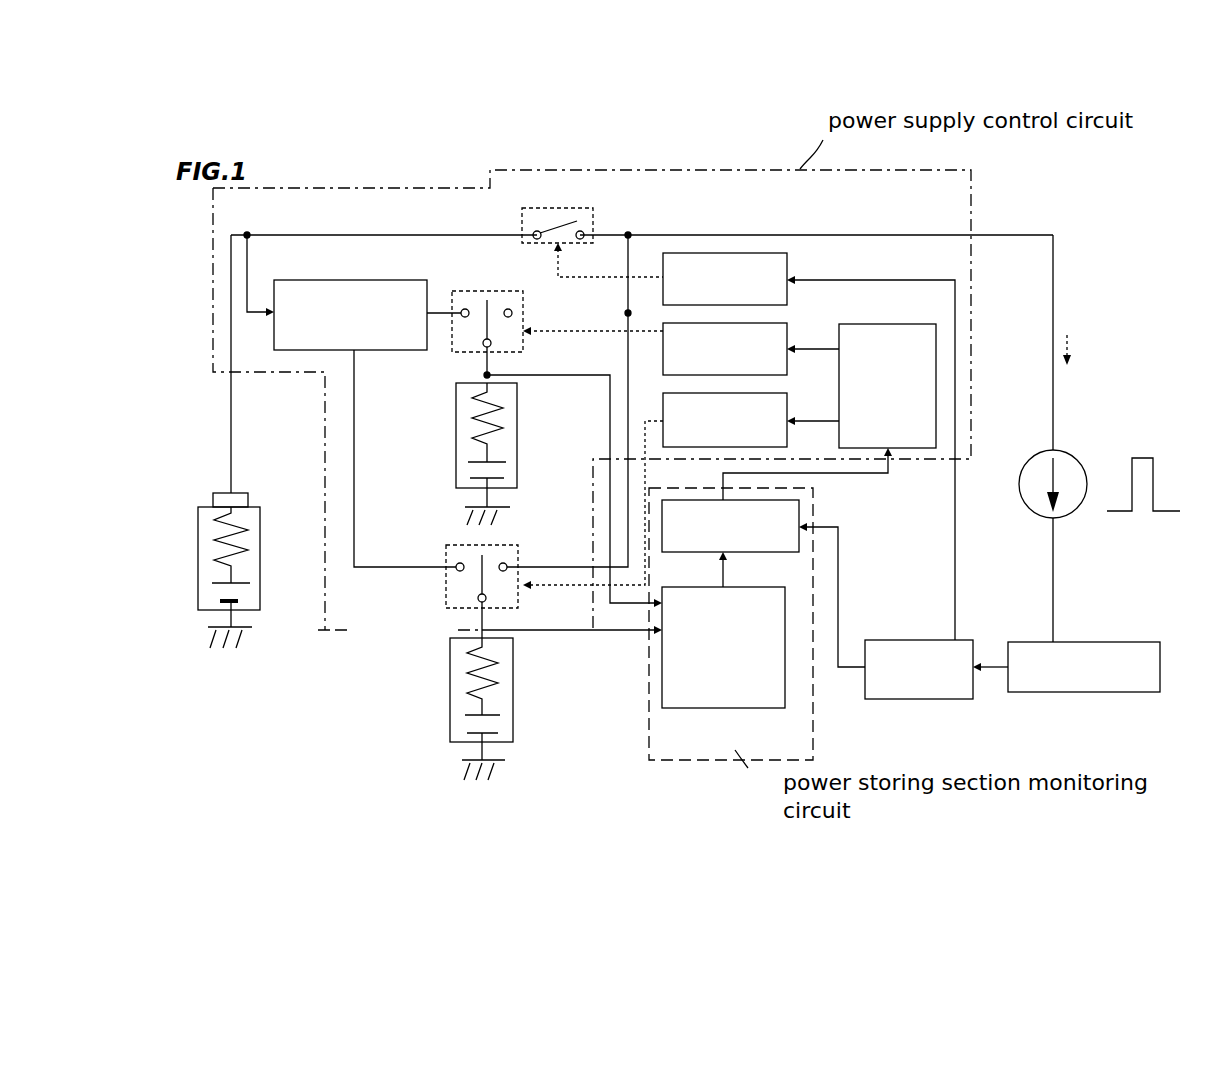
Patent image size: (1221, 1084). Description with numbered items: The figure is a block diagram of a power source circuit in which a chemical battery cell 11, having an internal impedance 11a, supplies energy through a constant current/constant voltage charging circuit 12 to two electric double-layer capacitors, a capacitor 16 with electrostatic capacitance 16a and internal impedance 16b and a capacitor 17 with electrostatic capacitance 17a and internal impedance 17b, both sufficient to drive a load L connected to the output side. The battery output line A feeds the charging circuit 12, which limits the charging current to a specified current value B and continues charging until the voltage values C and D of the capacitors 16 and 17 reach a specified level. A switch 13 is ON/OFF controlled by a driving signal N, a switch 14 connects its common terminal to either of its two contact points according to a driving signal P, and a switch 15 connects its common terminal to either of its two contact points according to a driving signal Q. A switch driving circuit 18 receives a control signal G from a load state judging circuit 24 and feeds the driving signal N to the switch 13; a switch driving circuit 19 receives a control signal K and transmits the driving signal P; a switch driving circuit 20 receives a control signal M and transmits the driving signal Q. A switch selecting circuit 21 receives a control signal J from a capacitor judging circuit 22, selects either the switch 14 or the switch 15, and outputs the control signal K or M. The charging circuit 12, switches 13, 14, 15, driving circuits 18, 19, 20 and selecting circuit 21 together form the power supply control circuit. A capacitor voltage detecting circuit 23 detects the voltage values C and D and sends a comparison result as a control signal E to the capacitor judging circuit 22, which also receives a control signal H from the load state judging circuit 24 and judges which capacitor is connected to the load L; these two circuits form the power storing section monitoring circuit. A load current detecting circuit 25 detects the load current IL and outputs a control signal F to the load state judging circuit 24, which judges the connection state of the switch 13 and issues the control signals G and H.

The chemical battery cell 11 is at (259, 595).
The internal impedance 11a is at (244, 544).
The constant current/constant voltage charging circuit 12 is at (345, 280).
The switch 13 is at (530, 208).
The switch 14 is at (460, 291).
The switch 15 is at (446, 590).
The capacitor 16 is at (524, 458).
The electrostatic capacitance 16a is at (502, 464).
The internal impedance 16b is at (502, 423).
The capacitor 17 is at (544, 719).
The electrostatic capacitance 17a is at (498, 715).
The internal impedance 17b is at (498, 676).
The switch driving circuit 18 is at (790, 268).
The switch driving circuit 19 is at (790, 339).
The switch driving circuit 20 is at (790, 410).
The switch selecting circuit 21 is at (925, 324).
The capacitor judging circuit 22 is at (800, 508).
The capacitor voltage detecting circuit 23 is at (785, 700).
The load state judging circuit 24 is at (960, 699).
The load current detecting circuit 25 is at (1085, 692).
The load L is at (1070, 452).
The load current IL is at (1121, 440).
The battery output line A is at (231, 415).
The specified current value B is at (354, 520).
The voltage value C is at (575, 376).
The voltage value D is at (578, 630).
The control signal E is at (726, 580).
The control signal F is at (990, 665).
The control signal G is at (955, 560).
The control signal H is at (838, 555).
The control signal J is at (885, 475).
The control signal K is at (820, 351).
The control signal M is at (822, 424).
The driving signal N is at (655, 280).
The driving signal P is at (655, 332).
The driving signal Q is at (648, 478).